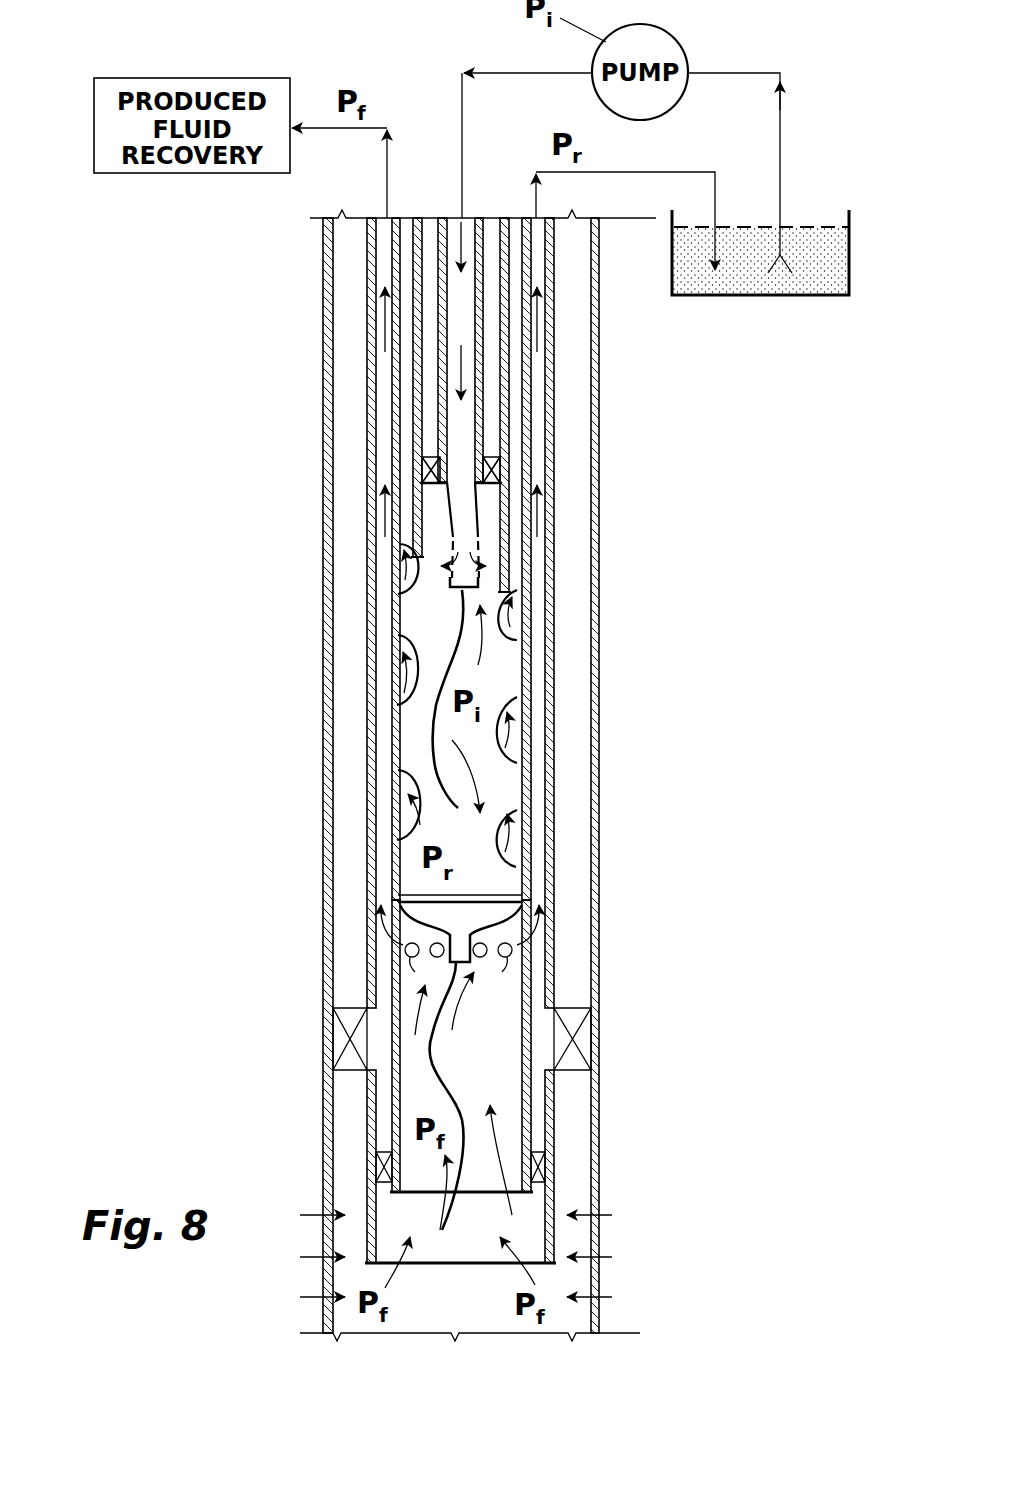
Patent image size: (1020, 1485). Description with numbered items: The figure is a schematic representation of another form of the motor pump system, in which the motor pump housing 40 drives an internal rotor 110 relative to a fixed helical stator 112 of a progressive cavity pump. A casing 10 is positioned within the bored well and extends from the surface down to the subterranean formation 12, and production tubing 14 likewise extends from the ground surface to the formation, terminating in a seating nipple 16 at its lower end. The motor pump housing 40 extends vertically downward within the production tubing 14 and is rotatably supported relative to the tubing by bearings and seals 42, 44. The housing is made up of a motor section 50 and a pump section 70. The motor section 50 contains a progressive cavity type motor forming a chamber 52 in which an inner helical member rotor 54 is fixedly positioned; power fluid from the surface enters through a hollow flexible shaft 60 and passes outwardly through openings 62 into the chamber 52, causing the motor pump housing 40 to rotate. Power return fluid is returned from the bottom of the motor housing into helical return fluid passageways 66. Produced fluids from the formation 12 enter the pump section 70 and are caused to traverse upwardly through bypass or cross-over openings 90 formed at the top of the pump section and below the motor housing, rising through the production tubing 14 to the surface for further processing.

The casing 10 is at (599, 415).
The subterranean formation 12 is at (275, 1270).
The production tubing 14 is at (553, 557).
The seating nipple 16 is at (578, 1037).
The motor pump housing 40 is at (530, 785).
The bearings and seals 42 is at (420, 468).
The bearings and seals 44 is at (488, 350).
The motor section 50 is at (539, 638).
The chamber 52 is at (425, 615).
The inner helical member rotor 54 is at (435, 740).
The hollow flexible shaft 60 is at (417, 520).
The openings 62 is at (483, 540).
The helical return fluid passageways 66 is at (513, 747).
The pump section 70 is at (383, 1118).
The bypass or cross-over openings 90 is at (395, 968).
The internal rotor 110 is at (455, 1085).
The fixed helical stator 112 is at (531, 955).